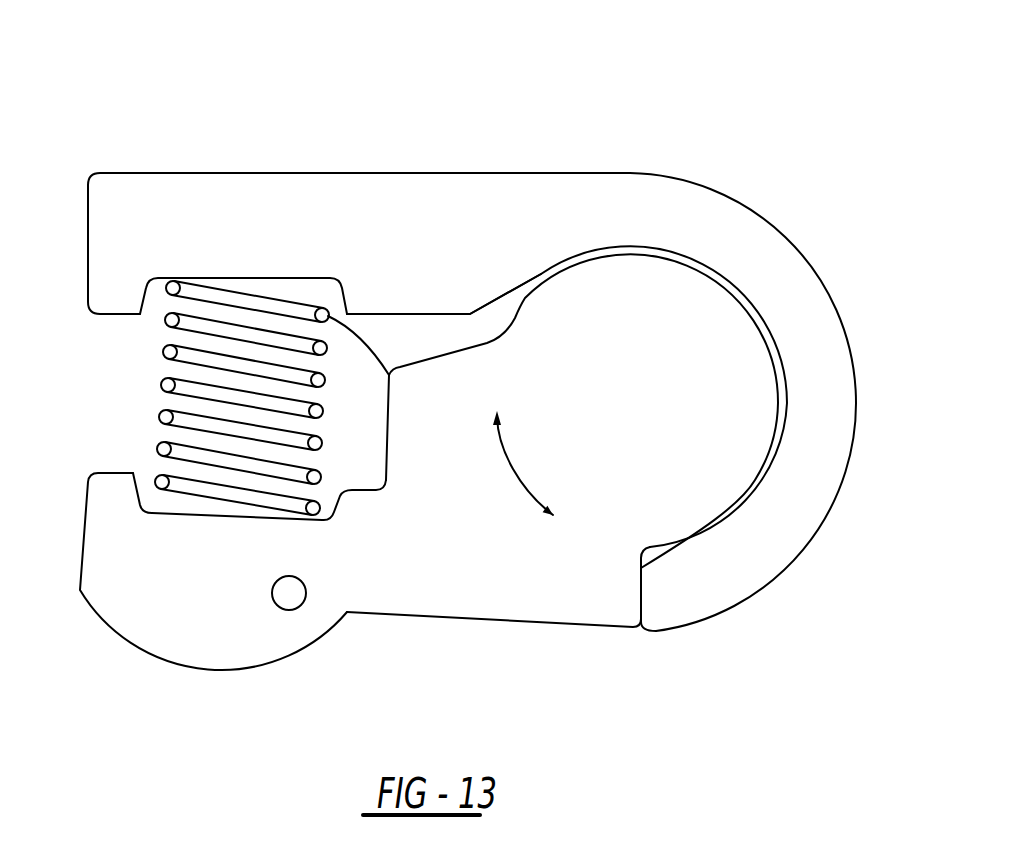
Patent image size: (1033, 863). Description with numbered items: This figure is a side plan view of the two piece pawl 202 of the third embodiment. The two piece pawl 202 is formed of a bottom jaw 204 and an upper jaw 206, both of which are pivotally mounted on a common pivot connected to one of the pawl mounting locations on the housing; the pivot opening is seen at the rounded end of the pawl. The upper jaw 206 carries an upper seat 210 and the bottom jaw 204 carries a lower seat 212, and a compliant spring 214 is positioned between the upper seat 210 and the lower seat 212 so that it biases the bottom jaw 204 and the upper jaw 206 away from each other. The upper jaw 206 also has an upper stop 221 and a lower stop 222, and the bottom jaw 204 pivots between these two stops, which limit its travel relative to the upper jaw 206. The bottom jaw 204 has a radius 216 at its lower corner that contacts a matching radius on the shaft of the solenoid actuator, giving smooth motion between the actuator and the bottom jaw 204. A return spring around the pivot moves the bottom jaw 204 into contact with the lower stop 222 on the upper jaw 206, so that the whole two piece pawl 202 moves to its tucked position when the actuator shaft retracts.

The two piece pawl 202 is at (794, 114).
The bottom jaw 204 is at (527, 562).
The upper jaw 206 is at (222, 205).
The upper seat 210 is at (285, 277).
The lower seat 212 is at (235, 518).
The compliant spring 214 is at (160, 386).
The radius 216 is at (125, 640).
The upper stop 221 is at (425, 312).
The lower stop 222 is at (643, 598).